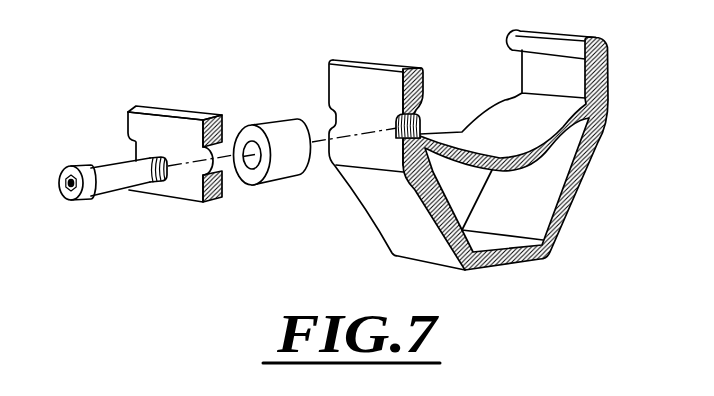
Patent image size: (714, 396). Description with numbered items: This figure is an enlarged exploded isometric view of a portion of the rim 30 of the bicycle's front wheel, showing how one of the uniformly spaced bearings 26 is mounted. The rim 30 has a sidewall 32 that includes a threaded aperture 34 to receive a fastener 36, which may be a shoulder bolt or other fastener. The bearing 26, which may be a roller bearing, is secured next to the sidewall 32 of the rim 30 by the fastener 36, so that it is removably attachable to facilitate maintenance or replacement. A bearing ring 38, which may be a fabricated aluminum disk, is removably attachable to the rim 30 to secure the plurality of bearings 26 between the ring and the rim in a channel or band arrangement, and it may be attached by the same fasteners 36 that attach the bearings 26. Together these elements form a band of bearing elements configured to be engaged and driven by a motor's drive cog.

The bearing 26 is at (280, 128).
The rim 30 is at (545, 68).
The sidewall 32 is at (382, 83).
The threaded aperture 34 is at (421, 119).
The fastener 36 is at (101, 171).
The bearing ring 38 is at (173, 113).